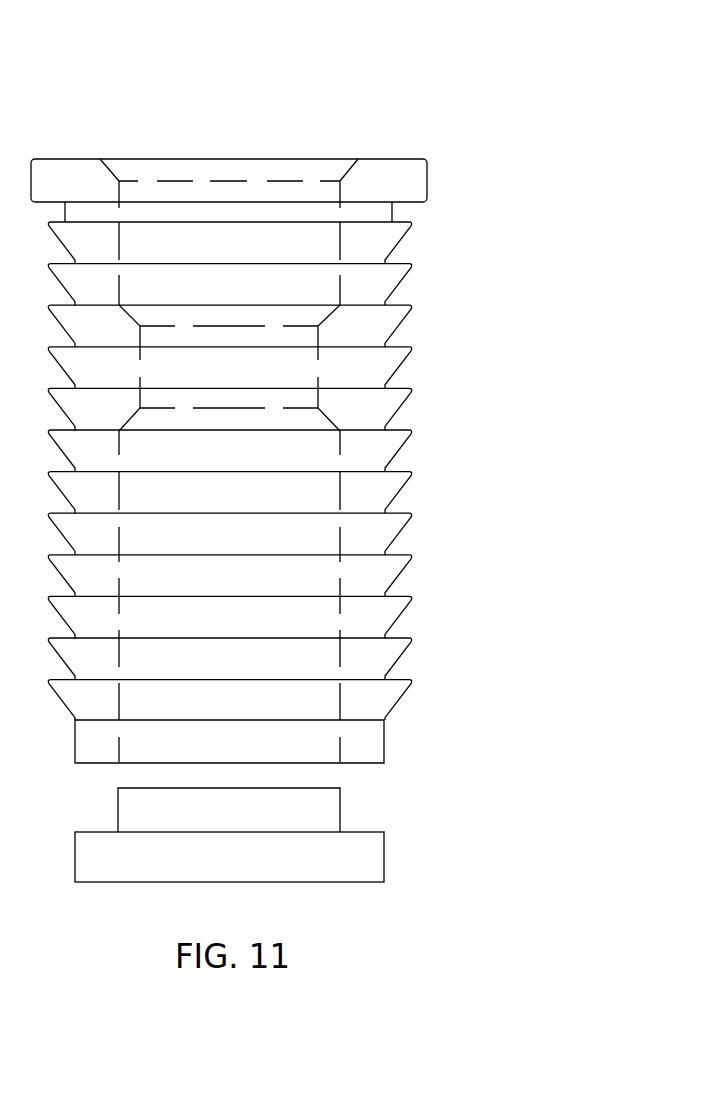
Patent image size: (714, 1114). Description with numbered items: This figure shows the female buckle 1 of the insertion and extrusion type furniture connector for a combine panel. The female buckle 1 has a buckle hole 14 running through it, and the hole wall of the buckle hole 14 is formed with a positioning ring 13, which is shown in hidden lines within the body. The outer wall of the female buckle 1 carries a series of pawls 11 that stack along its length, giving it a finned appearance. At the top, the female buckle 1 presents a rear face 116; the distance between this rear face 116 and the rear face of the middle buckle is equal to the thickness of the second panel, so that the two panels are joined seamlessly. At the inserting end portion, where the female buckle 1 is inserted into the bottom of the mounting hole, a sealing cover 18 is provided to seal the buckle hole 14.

The female buckle 1 is at (413, 185).
The pawls 11 is at (413, 307).
The positioning ring 13 is at (318, 360).
The buckle hole 14 is at (193, 181).
The rear face 116 is at (313, 158).
The sealing cover 18 is at (323, 797).